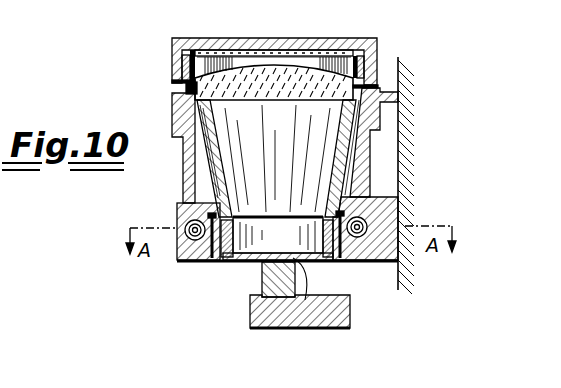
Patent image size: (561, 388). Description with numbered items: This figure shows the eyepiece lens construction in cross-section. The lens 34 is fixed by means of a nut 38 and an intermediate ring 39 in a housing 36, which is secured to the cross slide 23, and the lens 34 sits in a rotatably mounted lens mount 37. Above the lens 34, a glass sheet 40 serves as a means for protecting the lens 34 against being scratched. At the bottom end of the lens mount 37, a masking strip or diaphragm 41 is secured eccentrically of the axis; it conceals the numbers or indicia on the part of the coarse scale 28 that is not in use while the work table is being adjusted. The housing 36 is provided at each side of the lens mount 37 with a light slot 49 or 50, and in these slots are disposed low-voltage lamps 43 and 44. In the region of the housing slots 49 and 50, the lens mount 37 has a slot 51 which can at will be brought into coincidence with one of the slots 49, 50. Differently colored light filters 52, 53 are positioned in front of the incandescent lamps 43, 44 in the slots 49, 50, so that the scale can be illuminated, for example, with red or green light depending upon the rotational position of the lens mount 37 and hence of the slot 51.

The cross slide 23 is at (407, 180).
The coarse scale 28 is at (268, 330).
The lens 34 is at (290, 76).
The housing 36 is at (398, 100).
The lens mount 37 is at (350, 164).
The nut 38 is at (377, 53).
The intermediate ring 39 is at (181, 74).
The glass sheet 40 is at (340, 49).
The masking strip 41 is at (307, 299).
The low-voltage lamp 43 is at (185, 222).
The low-voltage lamp 44 is at (373, 222).
The light slot 49 is at (195, 262).
The light slot 50 is at (364, 262).
The slot 51 is at (226, 263).
The light filter 52 is at (210, 262).
The light filter 53 is at (351, 262).